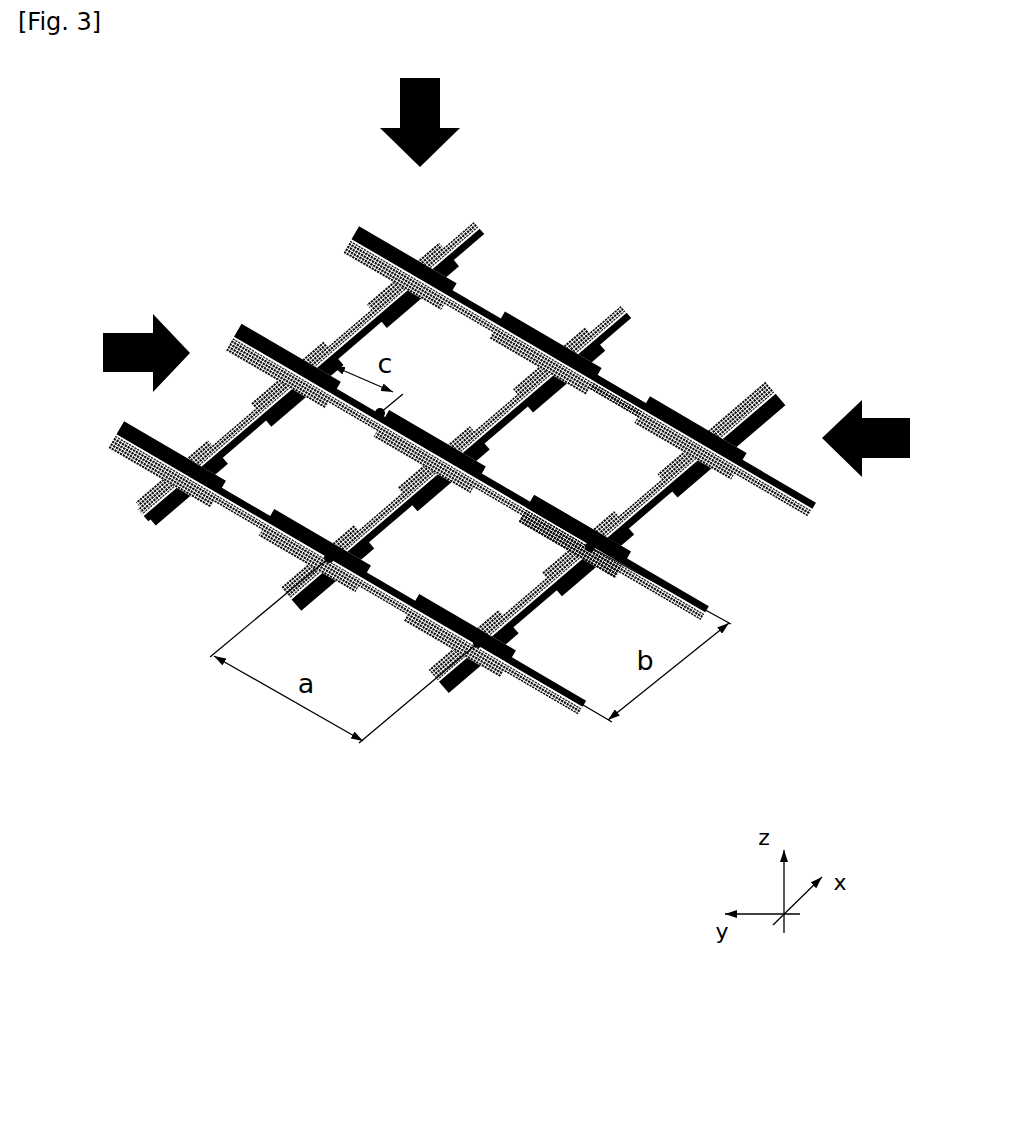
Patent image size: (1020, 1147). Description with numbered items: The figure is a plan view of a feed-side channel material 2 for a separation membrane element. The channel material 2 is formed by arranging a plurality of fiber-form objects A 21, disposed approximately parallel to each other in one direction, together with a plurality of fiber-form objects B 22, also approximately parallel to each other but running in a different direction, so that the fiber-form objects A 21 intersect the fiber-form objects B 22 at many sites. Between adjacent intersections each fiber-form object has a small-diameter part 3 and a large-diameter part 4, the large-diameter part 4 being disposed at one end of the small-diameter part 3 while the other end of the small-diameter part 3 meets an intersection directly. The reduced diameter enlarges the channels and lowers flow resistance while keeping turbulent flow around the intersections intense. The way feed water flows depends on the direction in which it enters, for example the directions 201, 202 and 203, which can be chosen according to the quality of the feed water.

The feed-side channel material 2 is at (484, 396).
The fiber-form objects A 21 is at (349, 227).
The fiber-form objects B 22 is at (484, 221).
The small-diameter part 3 is at (631, 377).
The large-diameter part 4 is at (557, 504).
The feed water flow direction 201 is at (146, 353).
The feed water flow direction 202 is at (420, 122).
The feed water flow direction 203 is at (866, 438).